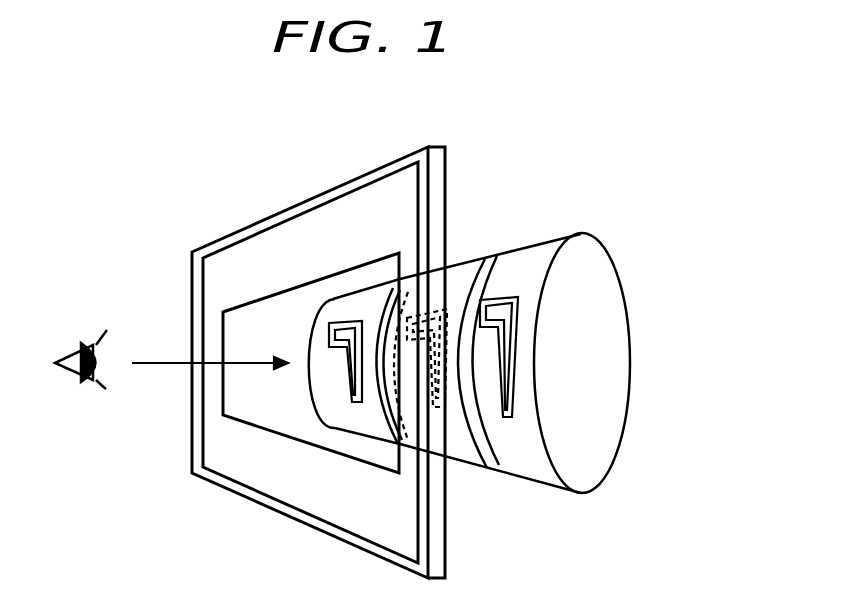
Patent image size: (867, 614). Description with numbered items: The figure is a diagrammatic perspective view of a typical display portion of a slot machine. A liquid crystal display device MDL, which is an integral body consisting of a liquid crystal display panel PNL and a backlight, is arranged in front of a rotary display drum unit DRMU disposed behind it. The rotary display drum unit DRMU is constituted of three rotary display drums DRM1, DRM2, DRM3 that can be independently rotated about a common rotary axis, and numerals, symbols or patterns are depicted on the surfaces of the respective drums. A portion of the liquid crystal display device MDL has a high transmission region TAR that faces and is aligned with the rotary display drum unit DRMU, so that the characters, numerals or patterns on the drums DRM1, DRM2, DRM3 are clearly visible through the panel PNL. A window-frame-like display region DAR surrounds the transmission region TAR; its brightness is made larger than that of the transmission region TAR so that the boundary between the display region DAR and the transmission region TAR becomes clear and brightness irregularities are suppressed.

The liquid crystal display panel PNL is at (294, 236).
The display region DAR is at (243, 262).
The transmission region TAR is at (262, 418).
The liquid crystal display device MDL is at (440, 146).
The rotary display drum unit DRMU is at (728, 160).
The rotary display drum DRM1 is at (373, 303).
The rotary display drum DRM2 is at (403, 293).
The rotary display drum DRM3 is at (535, 272).